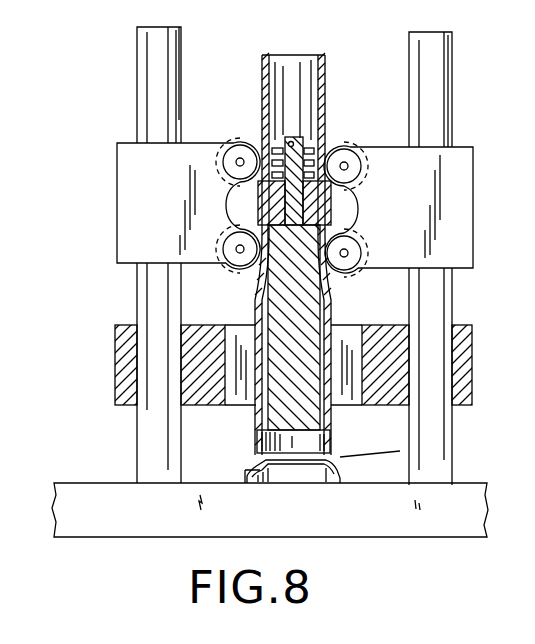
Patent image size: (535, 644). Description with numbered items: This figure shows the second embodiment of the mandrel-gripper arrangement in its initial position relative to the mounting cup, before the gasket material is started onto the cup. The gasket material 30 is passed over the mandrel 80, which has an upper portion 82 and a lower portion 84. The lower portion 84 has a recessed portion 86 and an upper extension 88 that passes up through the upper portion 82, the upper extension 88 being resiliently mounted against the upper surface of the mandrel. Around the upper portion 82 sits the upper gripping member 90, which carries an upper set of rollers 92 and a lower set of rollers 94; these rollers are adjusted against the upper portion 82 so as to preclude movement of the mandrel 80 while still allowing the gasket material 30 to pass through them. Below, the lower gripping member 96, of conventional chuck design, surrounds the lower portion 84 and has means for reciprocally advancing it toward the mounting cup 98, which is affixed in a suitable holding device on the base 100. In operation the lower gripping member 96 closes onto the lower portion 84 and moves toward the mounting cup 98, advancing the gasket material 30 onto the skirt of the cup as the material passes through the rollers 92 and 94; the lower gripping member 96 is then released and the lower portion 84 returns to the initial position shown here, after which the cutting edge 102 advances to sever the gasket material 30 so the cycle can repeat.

The gasket material 30 is at (320, 90).
The mandrel 80 is at (255, 194).
The upper portion 82 is at (330, 203).
The lower portion 84 is at (258, 428).
The recessed portion 86 is at (258, 296).
The upper extension 88 is at (292, 200).
The upper gripping member 90 is at (128, 205).
The upper set of rollers 92 is at (246, 142).
The lower set of rollers 94 is at (238, 272).
The lower gripping member 96 is at (466, 372).
The mounting cup 98 is at (352, 487).
The base 100 is at (414, 530).
The cutting edge 102 is at (340, 458).